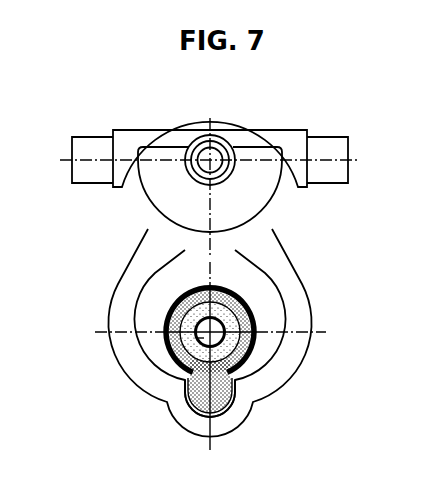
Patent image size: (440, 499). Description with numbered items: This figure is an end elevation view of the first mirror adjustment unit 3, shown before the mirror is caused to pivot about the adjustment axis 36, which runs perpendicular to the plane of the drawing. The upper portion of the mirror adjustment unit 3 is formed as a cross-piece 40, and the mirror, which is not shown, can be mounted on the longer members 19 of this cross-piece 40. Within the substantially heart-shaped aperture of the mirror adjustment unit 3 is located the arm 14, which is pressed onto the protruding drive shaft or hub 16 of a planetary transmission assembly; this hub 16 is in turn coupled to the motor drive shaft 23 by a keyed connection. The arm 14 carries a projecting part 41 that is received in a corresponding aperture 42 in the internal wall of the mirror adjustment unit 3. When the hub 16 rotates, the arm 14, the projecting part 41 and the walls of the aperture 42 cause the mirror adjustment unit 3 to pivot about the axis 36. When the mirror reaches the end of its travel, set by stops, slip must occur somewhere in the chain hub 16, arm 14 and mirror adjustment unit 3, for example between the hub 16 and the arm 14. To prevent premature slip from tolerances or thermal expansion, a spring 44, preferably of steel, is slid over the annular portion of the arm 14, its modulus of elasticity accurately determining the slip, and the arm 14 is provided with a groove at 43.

The first mirror adjustment unit 3 is at (150, 262).
The arm 14 is at (262, 338).
The hub 16 is at (253, 312).
The longer members 19 is at (332, 172).
The motor drive shaft 23 is at (200, 338).
The adjustment axis 36 is at (213, 158).
The cross-piece 40 is at (288, 138).
The projecting part 41 is at (230, 408).
The aperture 42 is at (192, 411).
The groove 43 is at (232, 285).
The spring 44 is at (163, 326).